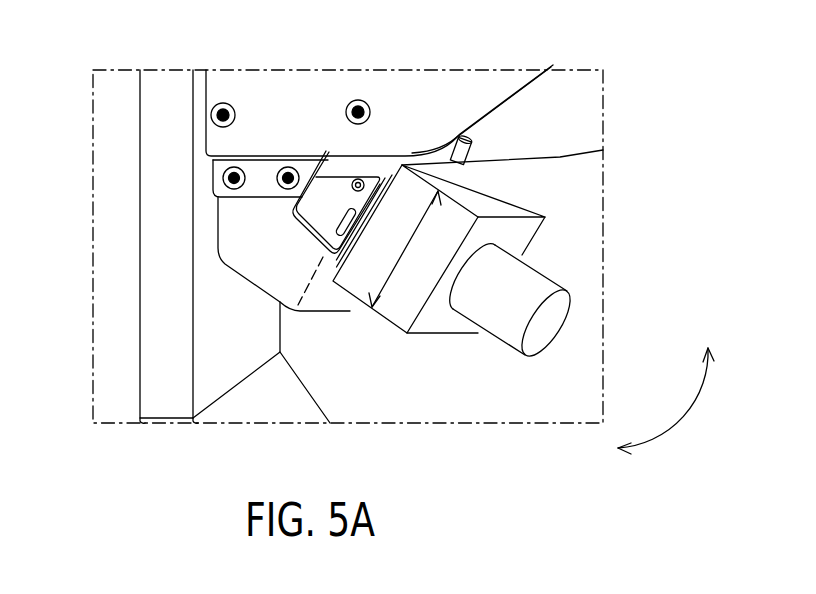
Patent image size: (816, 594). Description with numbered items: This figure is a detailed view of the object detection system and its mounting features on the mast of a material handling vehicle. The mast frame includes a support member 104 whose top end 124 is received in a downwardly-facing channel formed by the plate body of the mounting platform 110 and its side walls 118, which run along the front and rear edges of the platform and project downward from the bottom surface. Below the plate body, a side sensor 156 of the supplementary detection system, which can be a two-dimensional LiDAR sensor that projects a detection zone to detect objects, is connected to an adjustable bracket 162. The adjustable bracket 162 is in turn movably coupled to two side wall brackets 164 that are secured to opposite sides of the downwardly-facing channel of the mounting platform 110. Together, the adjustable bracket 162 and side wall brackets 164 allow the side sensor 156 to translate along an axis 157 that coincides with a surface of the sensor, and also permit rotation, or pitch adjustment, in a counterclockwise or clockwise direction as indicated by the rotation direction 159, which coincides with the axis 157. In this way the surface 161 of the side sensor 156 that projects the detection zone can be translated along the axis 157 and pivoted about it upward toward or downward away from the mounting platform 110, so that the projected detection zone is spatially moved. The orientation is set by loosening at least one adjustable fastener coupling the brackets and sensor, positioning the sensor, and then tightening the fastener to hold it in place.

The support member 104 is at (162, 278).
The mounting platform 110 is at (570, 115).
The side wall 118 is at (436, 110).
The top end 124 is at (172, 193).
The side sensor 156 is at (565, 194).
The axis 157 is at (406, 248).
The rotation direction 159 is at (696, 427).
The surface 161 is at (566, 297).
The adjustable bracket 162 is at (322, 303).
The side wall bracket 164 is at (268, 182).